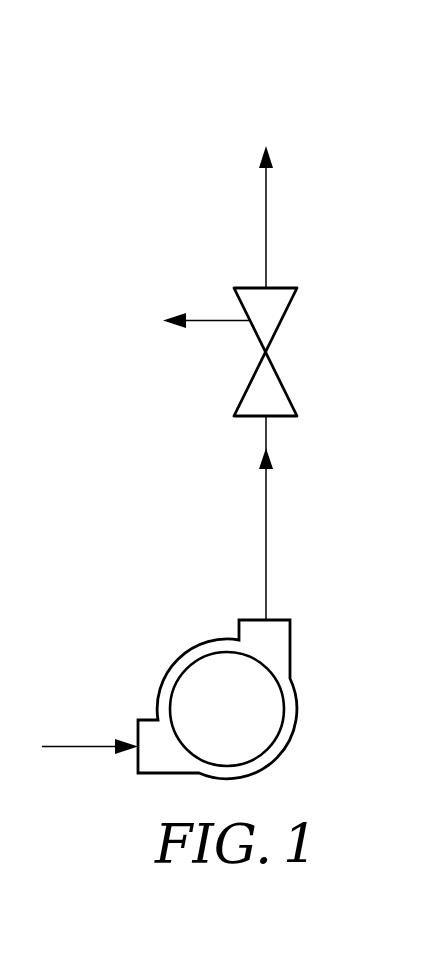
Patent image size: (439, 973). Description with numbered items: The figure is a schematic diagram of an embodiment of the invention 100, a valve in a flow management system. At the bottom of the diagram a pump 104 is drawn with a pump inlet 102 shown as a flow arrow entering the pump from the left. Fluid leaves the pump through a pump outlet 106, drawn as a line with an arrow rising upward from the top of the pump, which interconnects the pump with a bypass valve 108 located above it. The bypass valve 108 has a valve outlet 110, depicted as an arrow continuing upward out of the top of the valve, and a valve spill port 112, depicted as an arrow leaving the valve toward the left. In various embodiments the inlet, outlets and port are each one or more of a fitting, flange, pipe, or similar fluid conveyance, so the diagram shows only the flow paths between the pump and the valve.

The embodiment of the invention 100 is at (177, 198).
The pump inlet 102 is at (70, 745).
The pump 104 is at (291, 653).
The pump outlet 106 is at (266, 500).
The bypass valve 108 is at (284, 378).
The valve outlet 110 is at (266, 182).
The valve spill port 112 is at (203, 320).